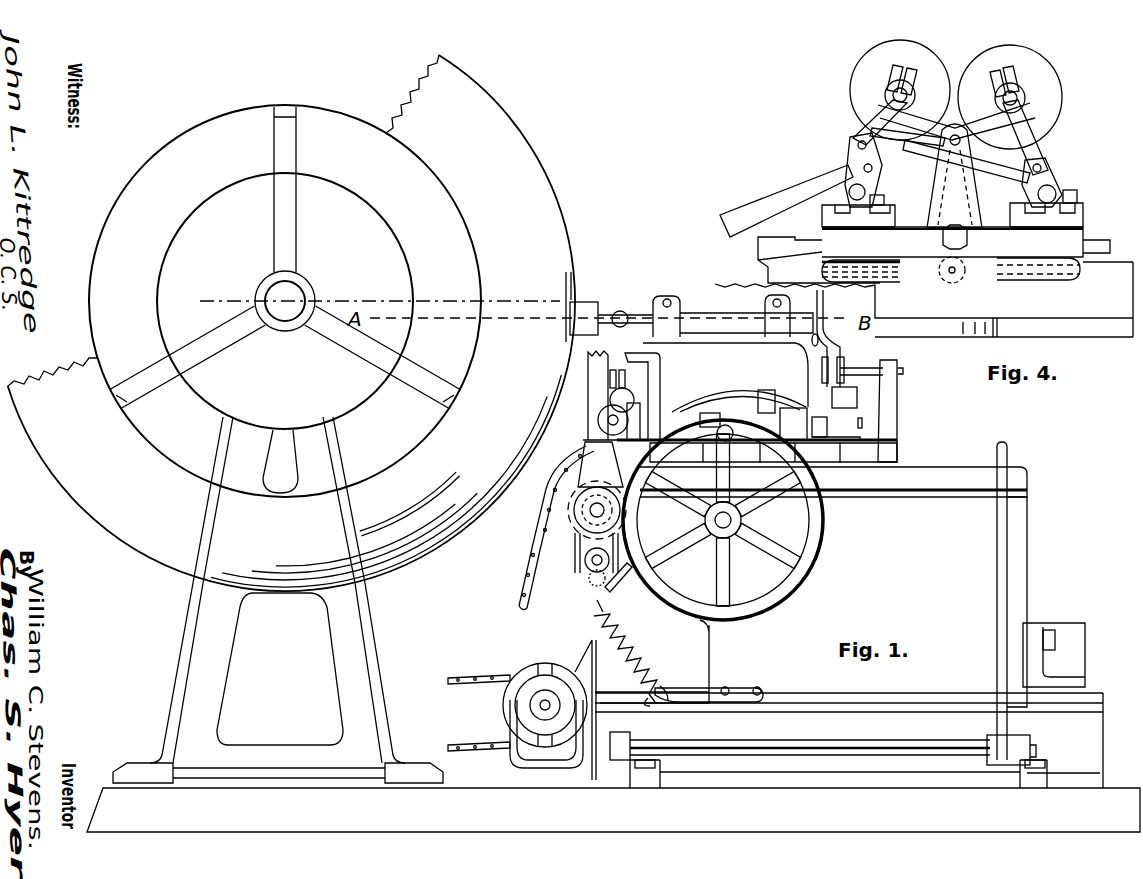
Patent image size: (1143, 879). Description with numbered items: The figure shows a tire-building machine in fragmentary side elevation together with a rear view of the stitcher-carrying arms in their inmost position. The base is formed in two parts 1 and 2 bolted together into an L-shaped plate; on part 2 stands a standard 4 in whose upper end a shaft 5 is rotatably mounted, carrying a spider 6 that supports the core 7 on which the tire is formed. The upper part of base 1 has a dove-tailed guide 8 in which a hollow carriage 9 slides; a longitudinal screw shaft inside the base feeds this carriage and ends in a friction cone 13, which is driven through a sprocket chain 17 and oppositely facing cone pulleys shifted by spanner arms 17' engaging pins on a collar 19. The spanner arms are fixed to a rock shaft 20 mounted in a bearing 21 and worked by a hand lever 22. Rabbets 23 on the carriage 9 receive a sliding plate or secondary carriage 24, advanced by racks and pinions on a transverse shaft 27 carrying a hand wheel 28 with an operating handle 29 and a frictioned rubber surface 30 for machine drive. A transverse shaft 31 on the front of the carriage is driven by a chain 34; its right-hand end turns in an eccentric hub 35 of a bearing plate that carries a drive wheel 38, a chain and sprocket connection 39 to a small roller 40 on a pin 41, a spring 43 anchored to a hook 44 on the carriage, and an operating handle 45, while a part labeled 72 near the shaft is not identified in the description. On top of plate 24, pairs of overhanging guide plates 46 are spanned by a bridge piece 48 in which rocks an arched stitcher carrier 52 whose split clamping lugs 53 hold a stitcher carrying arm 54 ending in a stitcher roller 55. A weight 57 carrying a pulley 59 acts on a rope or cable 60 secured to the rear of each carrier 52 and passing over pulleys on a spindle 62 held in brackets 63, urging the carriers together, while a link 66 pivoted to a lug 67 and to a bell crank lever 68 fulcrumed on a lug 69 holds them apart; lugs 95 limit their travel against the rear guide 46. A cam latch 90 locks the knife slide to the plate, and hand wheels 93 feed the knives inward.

In FIG. 1, the base part 1 is at (870, 810).
In FIG. 1, the base part 2 is at (343, 810).
In FIG. 1, the standard 4 is at (360, 641).
In FIG. 1, the shaft 5 is at (293, 292).
In FIG. 1, the spider 6 is at (300, 141).
In FIG. 1, the core 7 is at (527, 152).
In FIG. 1, the dove tailed guide 8 is at (608, 692).
In FIG. 1, the hollow carriage 9 is at (849, 627).
In FIG. 4, the hollow carriage 9 is at (924, 303).
In FIG. 1, the friction cone 13 is at (590, 650).
In FIG. 1, the sprocket chain 17 is at (479, 667).
In FIG. 1, the spanner arms 17' is at (479, 762).
In FIG. 1, the collar 19 is at (540, 690).
In FIG. 1, the rock shaft 20 is at (785, 745).
In FIG. 1, the bearing 21 is at (630, 735).
In FIG. 1, the hand lever 22 is at (1008, 548).
In FIG. 4, the rabbets 23 is at (758, 252).
In FIG. 4, the plate or secondary carriage 24 is at (1090, 235).
In FIG. 1, the transverse shaft 27 is at (740, 520).
In FIG. 1, the hand wheel 28 is at (823, 537).
In FIG. 1, the operating handle 29 is at (731, 441).
In FIG. 1, the frictioned surface 30 is at (818, 571).
In FIG. 1, the transverse shaft 31 is at (590, 511).
In FIG. 1, the chain 34 is at (526, 577).
In FIG. 1, the eccentric hub 35 is at (535, 533).
In FIG. 1, the drive wheel or roller 38 is at (580, 497).
In FIG. 1, the chain and sprocket connection 39 is at (585, 562).
In FIG. 1, the small roller 40 is at (590, 582).
In FIG. 1, the pin 41 is at (615, 580).
In FIG. 1, the spring 43 is at (642, 633).
In FIG. 1, the hook 44 is at (665, 685).
In FIG. 1, the operating handle 45 is at (598, 418).
In FIG. 4, the overhanging guide plates 46 is at (822, 218).
In FIG. 1, the transverse bridge piece 48 is at (707, 417).
In FIG. 1, the arched rocking stitcher carrier 52 is at (725, 375).
In FIG. 4, the arched rocking stitcher carrier 52 is at (855, 140).
In FIG. 1, the split clamping lugs 53 is at (762, 302).
In FIG. 1, the stitcher carrying arm 54 is at (707, 313).
In FIG. 4, the stitcher carrying arm 54 is at (880, 108).
In FIG. 1, the stitcher roller 55 is at (612, 290).
In FIG. 4, the stitcher roller 55 is at (855, 95).
In FIG. 4, the weight 57 is at (1038, 269).
In FIG. 4, the pulley 59 is at (861, 269).
In FIG. 4, the rope or cable 60 is at (1045, 125).
In FIG. 1, the spindle 62 is at (903, 372).
In FIG. 1, the brackets 63 is at (890, 422).
In FIG. 4, the brackets 63 is at (954, 176).
In FIG. 4, the link 66 is at (1020, 180).
In FIG. 4, the lug 67 is at (1065, 180).
In FIG. 1, the bell crank lever 68 is at (828, 298).
In FIG. 4, the bell crank lever 68 is at (780, 195).
In FIG. 1, the lug 69 is at (858, 400).
In FIG. 4, the lug 69 is at (845, 170).
In FIG. 1, the collar 72 is at (625, 312).
In FIG. 1, the cam latch 90 is at (648, 352).
In FIG. 1, the hand wheels 93 is at (585, 443).
In FIG. 1, the lugs 95 is at (880, 447).
In FIG. 4, the lugs 95 is at (878, 196).